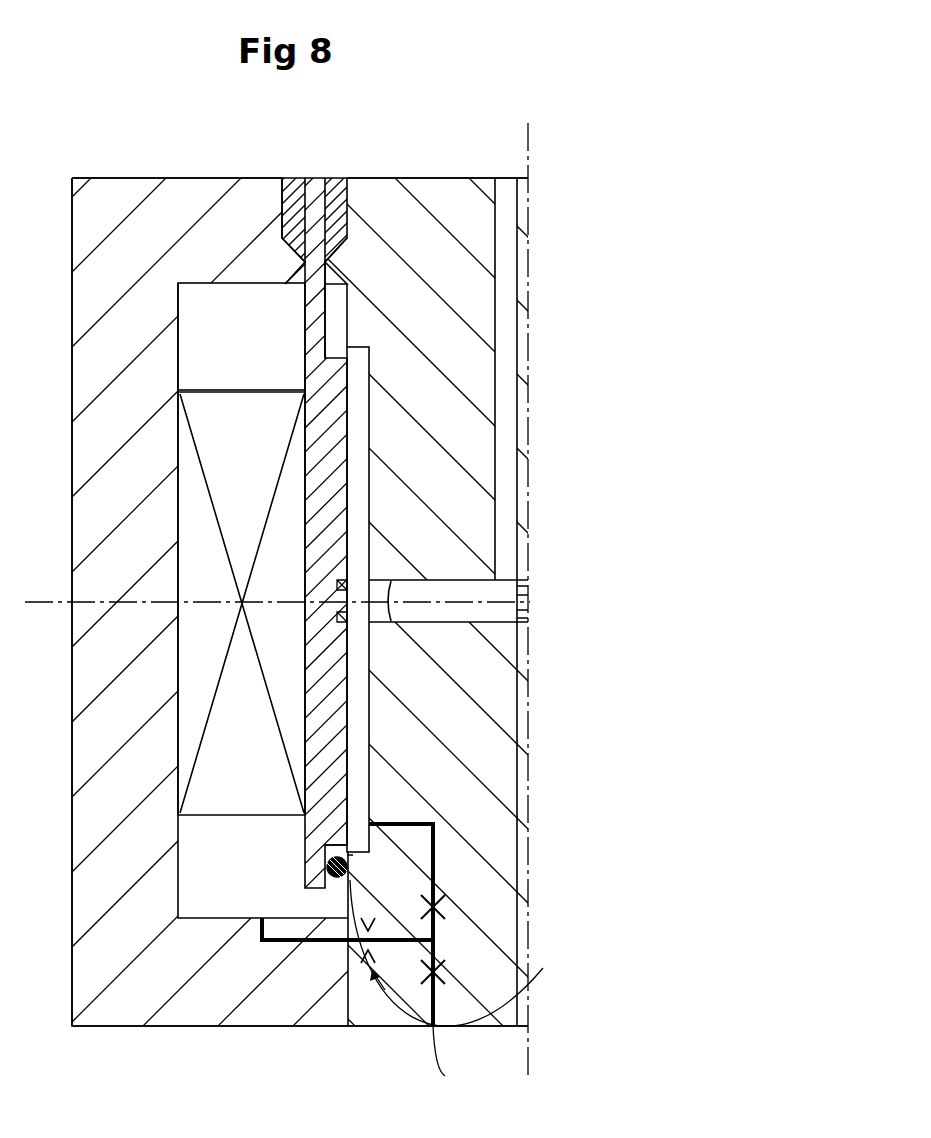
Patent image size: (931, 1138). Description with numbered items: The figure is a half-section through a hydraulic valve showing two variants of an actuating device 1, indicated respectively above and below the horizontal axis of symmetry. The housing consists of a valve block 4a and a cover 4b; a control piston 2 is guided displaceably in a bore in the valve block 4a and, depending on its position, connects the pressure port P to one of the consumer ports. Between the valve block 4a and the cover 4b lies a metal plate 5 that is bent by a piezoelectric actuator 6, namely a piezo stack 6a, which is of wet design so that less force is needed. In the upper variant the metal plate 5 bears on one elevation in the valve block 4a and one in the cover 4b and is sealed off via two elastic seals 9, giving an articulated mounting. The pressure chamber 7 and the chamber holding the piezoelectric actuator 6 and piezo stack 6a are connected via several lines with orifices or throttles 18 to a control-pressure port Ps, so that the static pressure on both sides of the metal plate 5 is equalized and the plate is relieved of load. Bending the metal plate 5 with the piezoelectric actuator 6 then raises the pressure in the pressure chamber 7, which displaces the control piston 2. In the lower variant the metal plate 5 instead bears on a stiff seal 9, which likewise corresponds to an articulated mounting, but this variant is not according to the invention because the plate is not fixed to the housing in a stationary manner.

The actuating device 1 is at (414, 122).
The control piston 2 is at (460, 590).
The valve block 4a is at (432, 188).
The cover 4b is at (180, 197).
The metal plate 5 is at (315, 193).
The piezoelectric actuator 6 is at (241, 549).
The piezo stack 6a is at (241, 603).
The pressure chamber 7 is at (357, 390).
The elastic seal 9 is at (297, 193).
The throttle 18 is at (456, 976).
The pressure port P is at (527, 1028).
The control-pressure port Ps is at (377, 964).